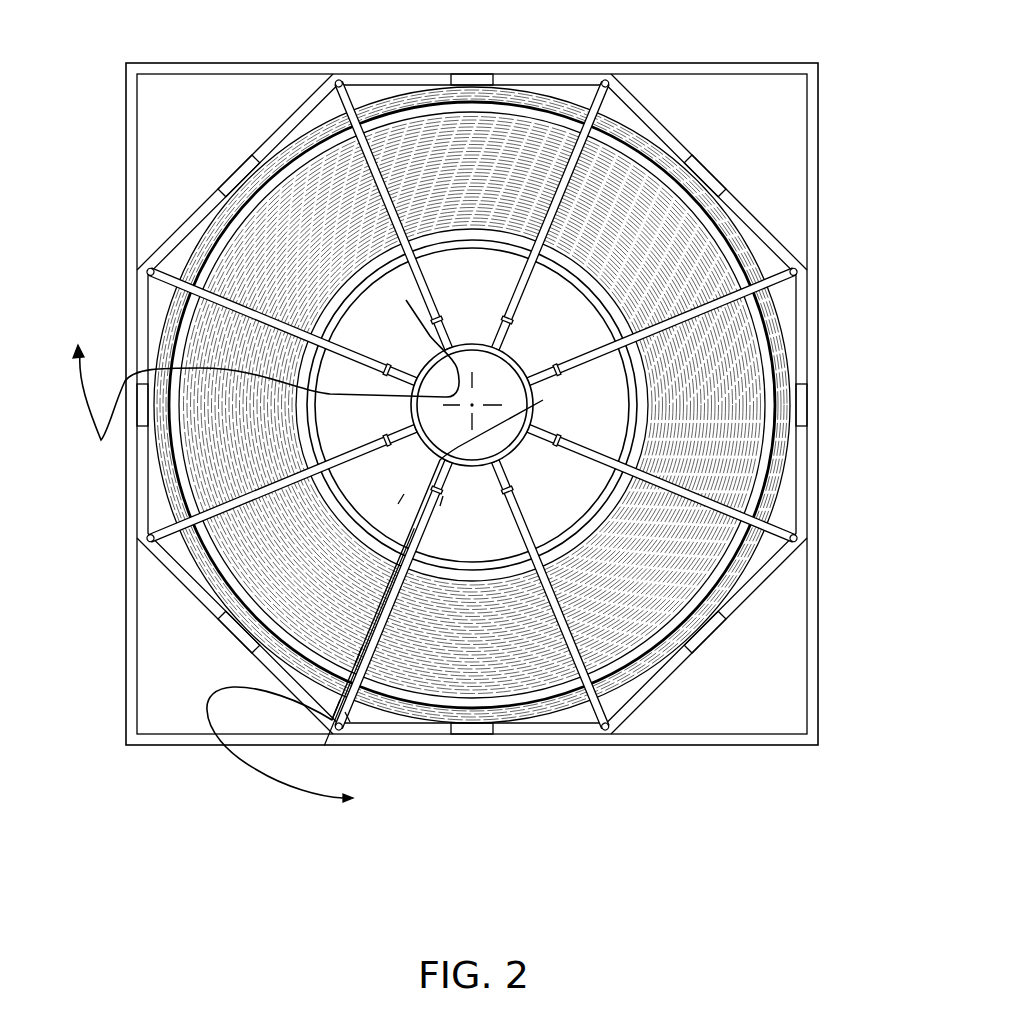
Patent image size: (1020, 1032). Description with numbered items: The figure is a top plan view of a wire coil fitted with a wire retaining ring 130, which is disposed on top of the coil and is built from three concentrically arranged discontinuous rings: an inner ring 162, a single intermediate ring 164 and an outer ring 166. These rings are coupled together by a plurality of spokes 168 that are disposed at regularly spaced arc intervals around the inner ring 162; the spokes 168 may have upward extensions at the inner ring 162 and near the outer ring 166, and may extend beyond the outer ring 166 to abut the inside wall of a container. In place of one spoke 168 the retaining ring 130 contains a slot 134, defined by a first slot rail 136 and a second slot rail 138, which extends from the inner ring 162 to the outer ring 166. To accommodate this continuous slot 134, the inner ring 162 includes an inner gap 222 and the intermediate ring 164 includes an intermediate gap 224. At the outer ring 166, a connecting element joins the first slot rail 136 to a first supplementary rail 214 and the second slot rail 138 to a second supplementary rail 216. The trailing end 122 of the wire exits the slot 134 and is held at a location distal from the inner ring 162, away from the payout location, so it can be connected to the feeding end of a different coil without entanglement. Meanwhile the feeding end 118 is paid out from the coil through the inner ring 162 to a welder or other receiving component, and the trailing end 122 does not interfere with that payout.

The feeding end 118 is at (101, 442).
The trailing end 122 is at (233, 760).
The wire retaining ring 130 is at (414, 636).
The slot 134 is at (400, 500).
The first slot rail 136 is at (441, 500).
The second slot rail 138 is at (354, 662).
The inner ring 162 is at (510, 350).
The intermediate ring 164 is at (507, 320).
The outer ring 166 is at (532, 108).
The spokes 168 is at (675, 483).
The first supplementary rail 214 is at (333, 712).
The second supplementary rail 216 is at (350, 722).
The inner gap 222 is at (456, 555).
The intermediate gap 224 is at (412, 545).